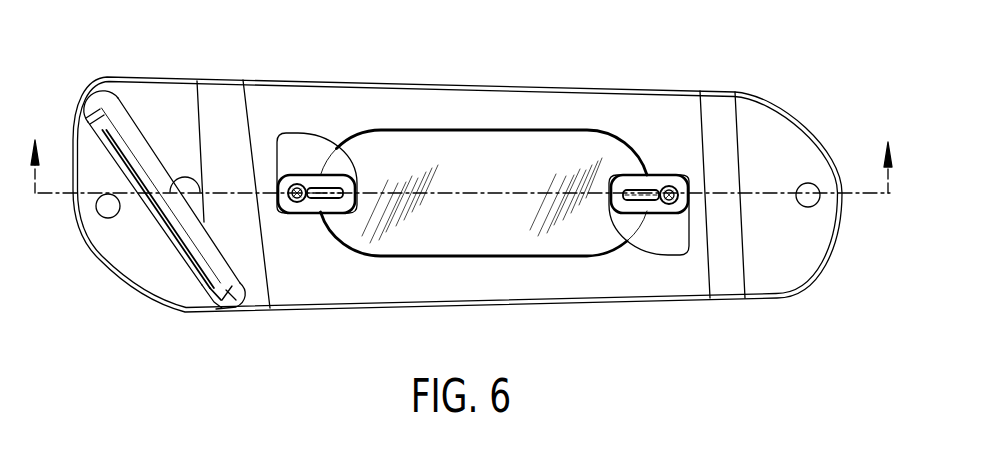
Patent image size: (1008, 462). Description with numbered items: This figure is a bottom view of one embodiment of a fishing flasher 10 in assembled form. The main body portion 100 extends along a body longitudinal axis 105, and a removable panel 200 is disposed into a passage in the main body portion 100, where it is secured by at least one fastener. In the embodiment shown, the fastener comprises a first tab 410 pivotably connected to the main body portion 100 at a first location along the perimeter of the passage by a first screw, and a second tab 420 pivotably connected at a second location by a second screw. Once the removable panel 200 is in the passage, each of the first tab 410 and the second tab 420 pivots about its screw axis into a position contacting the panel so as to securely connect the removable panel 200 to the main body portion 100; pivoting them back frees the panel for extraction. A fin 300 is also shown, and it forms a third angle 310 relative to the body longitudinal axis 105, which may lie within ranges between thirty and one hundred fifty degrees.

The fishing flasher 10 is at (697, 371).
The main body portion 100 is at (387, 104).
The body longitudinal axis 105 is at (857, 194).
The removable panel 200 is at (538, 240).
The fin 300 is at (177, 257).
The third angle 310 is at (177, 172).
The first tab 410 is at (653, 180).
The second tab 420 is at (292, 178).